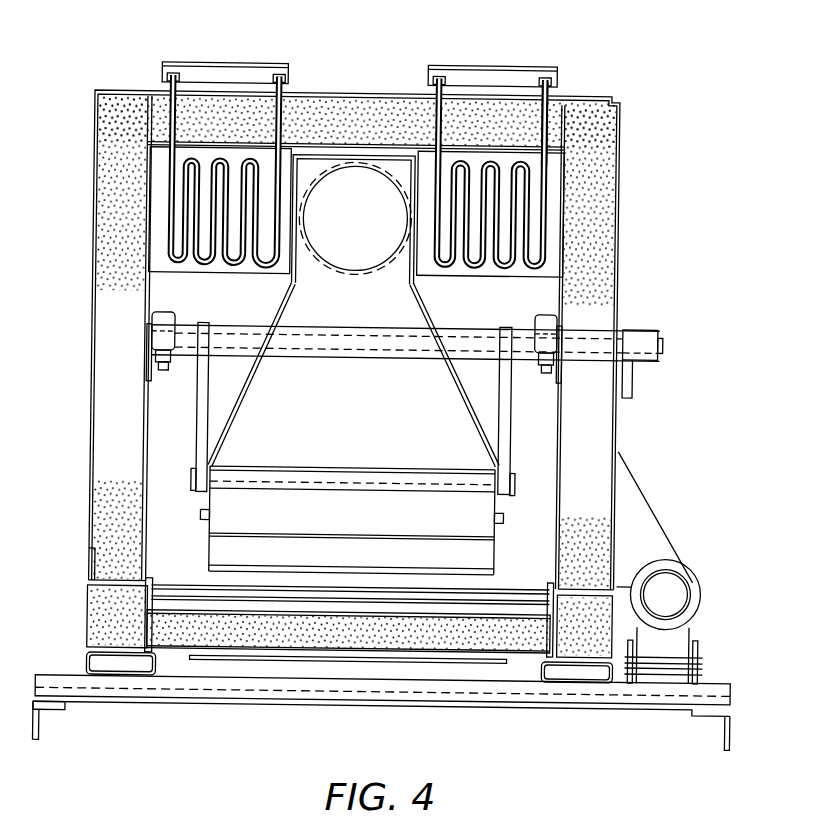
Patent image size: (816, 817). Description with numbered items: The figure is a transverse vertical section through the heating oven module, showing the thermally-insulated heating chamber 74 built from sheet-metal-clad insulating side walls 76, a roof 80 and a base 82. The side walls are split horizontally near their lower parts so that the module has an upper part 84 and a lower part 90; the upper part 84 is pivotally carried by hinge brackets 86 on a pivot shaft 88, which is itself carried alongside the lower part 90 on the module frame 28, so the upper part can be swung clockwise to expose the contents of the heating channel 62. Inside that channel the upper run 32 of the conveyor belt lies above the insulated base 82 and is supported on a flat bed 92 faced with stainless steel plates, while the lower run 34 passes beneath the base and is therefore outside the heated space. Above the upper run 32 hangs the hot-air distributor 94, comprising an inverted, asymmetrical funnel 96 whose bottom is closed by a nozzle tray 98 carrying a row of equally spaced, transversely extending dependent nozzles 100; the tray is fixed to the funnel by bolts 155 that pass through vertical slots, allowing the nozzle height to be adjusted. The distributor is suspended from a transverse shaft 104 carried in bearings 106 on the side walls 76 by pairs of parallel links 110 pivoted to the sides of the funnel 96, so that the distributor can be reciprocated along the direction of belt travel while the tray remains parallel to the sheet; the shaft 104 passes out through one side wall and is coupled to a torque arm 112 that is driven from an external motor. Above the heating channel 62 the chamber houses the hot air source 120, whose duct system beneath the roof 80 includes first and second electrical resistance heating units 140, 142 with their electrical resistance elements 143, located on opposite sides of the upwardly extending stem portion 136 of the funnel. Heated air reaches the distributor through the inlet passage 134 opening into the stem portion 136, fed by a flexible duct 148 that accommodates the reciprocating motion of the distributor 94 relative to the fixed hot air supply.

The module frame 28 is at (730, 679).
The upper run 32 is at (509, 585).
The lower run 34 is at (492, 658).
The heating channel 62 is at (528, 444).
The heating chamber 74 is at (623, 261).
The side walls 76 is at (108, 325).
The roof 80 is at (395, 99).
The base 82 is at (520, 641).
The upper part 84 is at (94, 568).
The hinge brackets 86 is at (674, 517).
The pivot shaft 88 is at (694, 579).
The lower part 90 is at (92, 627).
The flat bed 92 is at (539, 586).
The hot-air distributor 94 is at (503, 501).
The inverted asymmetrical funnel 96 is at (472, 398).
The nozzle tray 98 is at (443, 563).
The nozzles 100 is at (216, 568).
The transverse shaft 104 is at (525, 326).
The bearings 106 is at (180, 311).
The links 110 is at (201, 387).
The torque arm 112 is at (636, 371).
The hot air source 120 is at (569, 206).
The inlet passage 134 is at (370, 266).
The stem portion 136 is at (414, 281).
The first electrical resistance heating unit 140 is at (555, 240).
The second electrical resistance heating unit 142 is at (155, 226).
The electrical resistance elements 143 is at (549, 177).
The flexible duct 148 is at (327, 264).
The bolts 155 is at (212, 498).